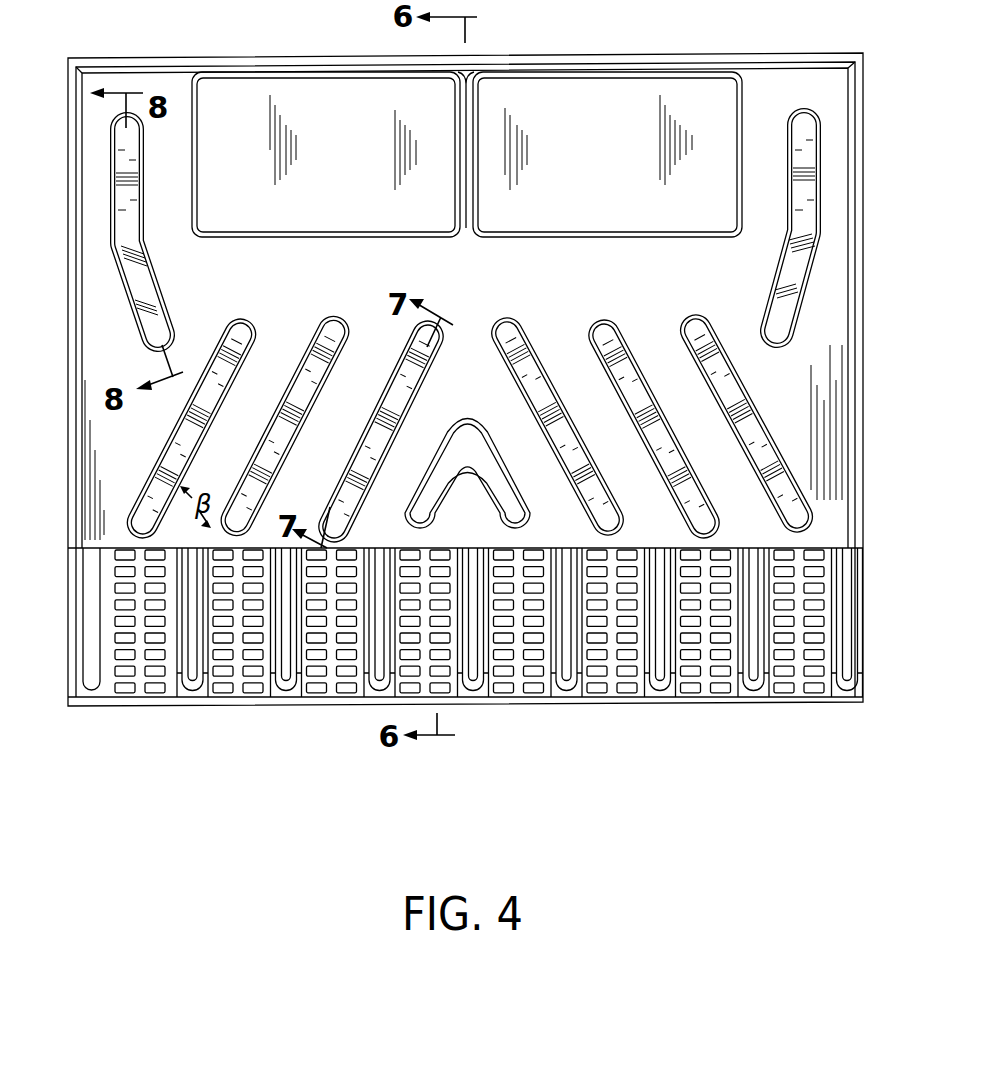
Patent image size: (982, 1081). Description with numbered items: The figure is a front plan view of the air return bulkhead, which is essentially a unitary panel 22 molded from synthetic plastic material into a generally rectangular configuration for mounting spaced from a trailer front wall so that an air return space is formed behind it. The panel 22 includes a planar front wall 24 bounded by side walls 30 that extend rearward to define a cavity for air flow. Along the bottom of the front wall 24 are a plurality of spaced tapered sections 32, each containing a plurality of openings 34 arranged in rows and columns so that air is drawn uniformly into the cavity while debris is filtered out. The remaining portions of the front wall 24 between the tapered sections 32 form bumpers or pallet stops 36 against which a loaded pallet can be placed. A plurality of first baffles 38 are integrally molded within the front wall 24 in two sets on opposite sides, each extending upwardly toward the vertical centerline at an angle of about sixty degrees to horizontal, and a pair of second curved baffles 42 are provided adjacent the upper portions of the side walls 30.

The panel 22 is at (624, 46).
The front wall 24 is at (543, 283).
The side walls 30 is at (76, 348).
The tapered sections 32 is at (590, 665).
The openings 34 is at (505, 668).
The pallet stops 36 is at (180, 690).
The first baffles 38 is at (284, 393).
The second curved baffles 42 is at (146, 219).